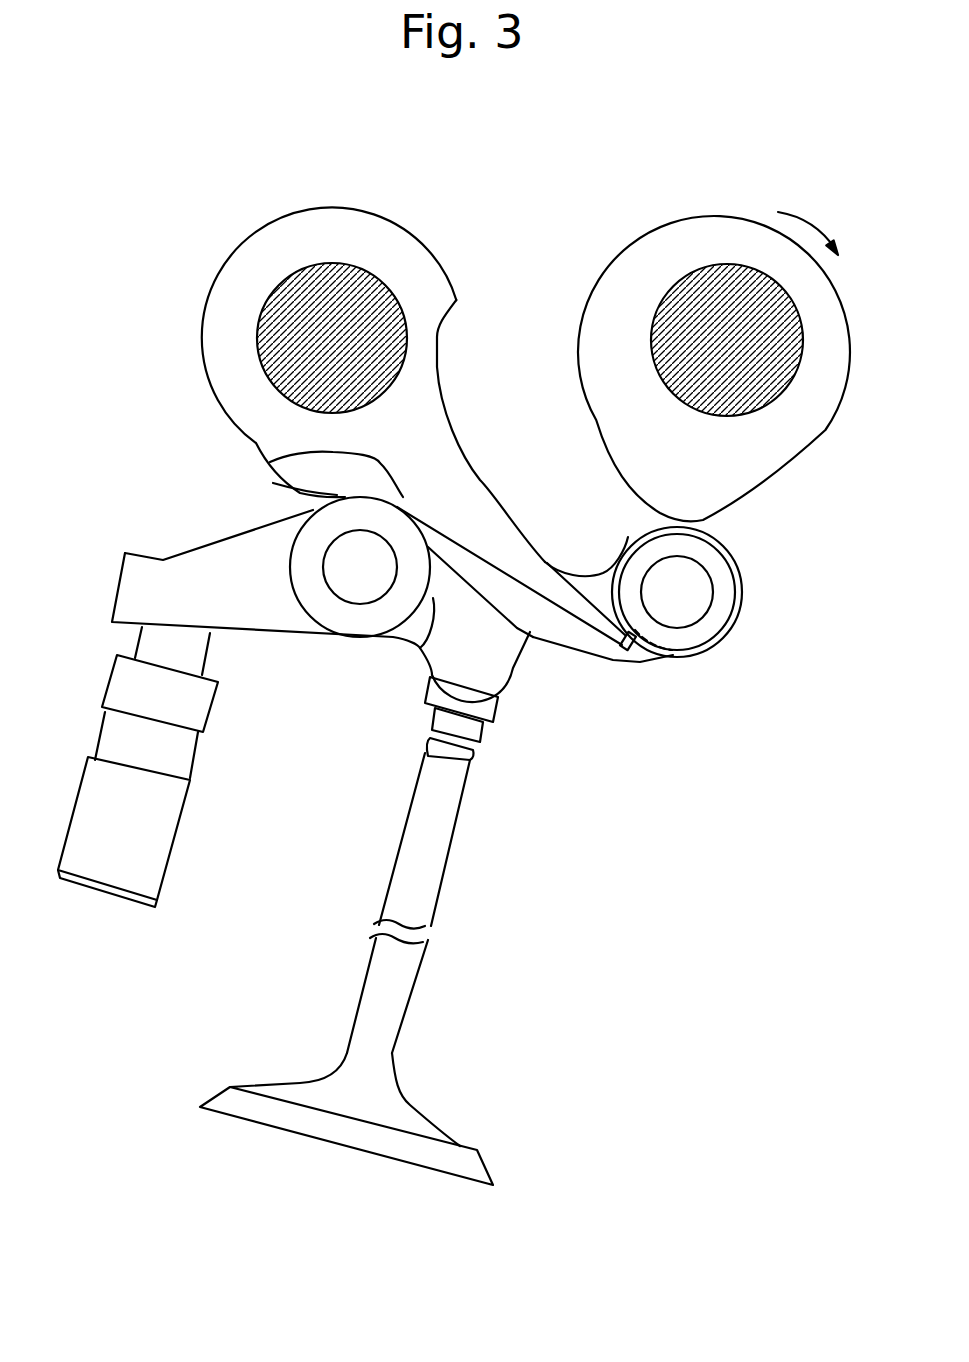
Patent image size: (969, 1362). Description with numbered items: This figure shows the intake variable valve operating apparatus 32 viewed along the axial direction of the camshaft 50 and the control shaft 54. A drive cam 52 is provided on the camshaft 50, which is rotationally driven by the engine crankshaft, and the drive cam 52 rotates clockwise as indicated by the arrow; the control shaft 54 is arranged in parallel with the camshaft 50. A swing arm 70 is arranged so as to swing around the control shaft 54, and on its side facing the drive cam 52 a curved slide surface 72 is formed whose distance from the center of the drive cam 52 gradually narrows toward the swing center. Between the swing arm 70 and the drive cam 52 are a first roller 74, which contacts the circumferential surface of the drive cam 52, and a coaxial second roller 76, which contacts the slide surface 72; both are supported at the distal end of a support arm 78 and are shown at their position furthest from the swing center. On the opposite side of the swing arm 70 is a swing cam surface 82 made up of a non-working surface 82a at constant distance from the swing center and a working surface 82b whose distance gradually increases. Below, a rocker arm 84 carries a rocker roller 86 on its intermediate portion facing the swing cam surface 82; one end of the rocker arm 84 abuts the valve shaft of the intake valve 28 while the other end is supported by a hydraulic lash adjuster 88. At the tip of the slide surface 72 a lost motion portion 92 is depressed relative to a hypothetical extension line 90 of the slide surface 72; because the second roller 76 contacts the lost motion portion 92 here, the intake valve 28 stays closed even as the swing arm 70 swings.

The intake valve 28 is at (447, 1130).
The intake variable valve operating apparatus 32 is at (524, 222).
The camshaft 50 is at (722, 288).
The drive cam 52 is at (748, 480).
The control shaft 54 is at (333, 290).
The swing arm 70 is at (440, 463).
The slide surface 72 is at (483, 480).
The first roller 74 is at (745, 580).
The second roller 76 is at (741, 603).
The support arm 78 is at (553, 635).
The swing cam surface 82 is at (140, 436).
The non-working surface 82a is at (337, 495).
The working surface 82b is at (340, 453).
The rocker arm 84 is at (270, 617).
The rocker roller 86 is at (420, 648).
The hydraulic lash adjuster 88 is at (162, 852).
The hypothetical extension line 90 is at (662, 672).
The lost motion portion 92 is at (620, 657).